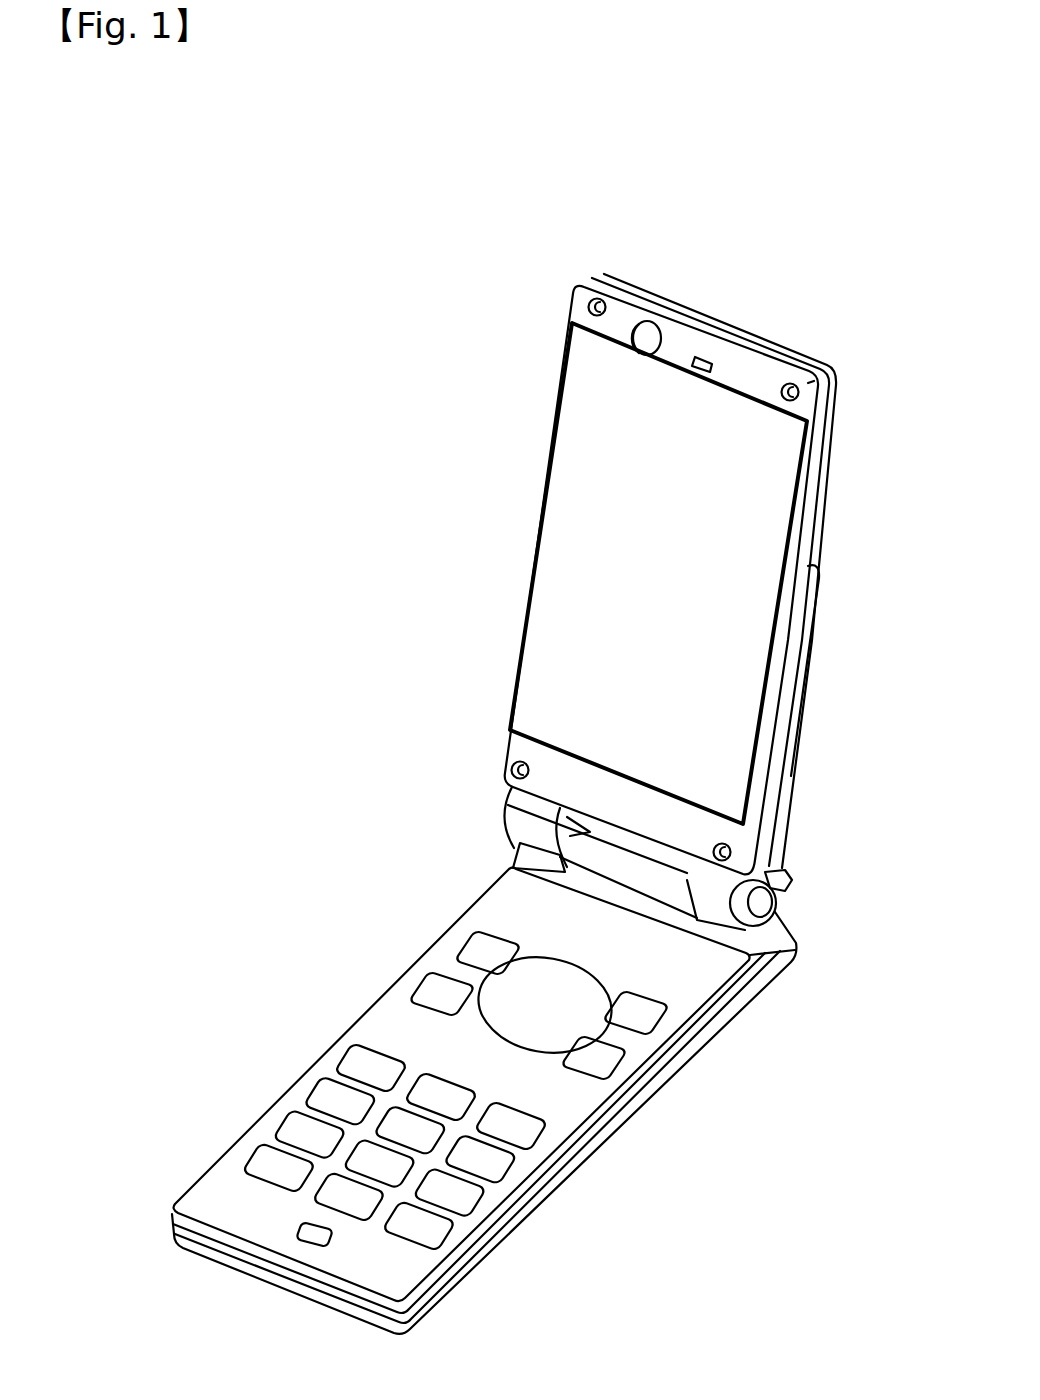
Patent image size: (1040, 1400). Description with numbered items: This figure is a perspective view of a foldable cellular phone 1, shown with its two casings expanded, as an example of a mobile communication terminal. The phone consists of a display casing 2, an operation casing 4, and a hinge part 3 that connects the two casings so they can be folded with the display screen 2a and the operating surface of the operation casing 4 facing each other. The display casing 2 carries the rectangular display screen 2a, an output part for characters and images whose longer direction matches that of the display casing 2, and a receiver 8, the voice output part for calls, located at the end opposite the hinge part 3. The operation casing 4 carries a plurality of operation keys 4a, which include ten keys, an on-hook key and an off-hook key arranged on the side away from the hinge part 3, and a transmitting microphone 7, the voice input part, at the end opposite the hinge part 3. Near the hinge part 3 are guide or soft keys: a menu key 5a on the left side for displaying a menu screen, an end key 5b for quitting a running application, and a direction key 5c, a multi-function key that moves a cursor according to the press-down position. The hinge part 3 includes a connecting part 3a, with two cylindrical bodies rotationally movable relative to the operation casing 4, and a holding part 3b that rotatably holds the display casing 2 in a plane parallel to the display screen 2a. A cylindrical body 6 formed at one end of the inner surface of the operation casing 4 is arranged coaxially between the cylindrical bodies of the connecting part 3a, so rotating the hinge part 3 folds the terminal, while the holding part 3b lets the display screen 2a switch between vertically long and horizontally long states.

The cellular phone 1 is at (330, 600).
The display casing 2 is at (807, 346).
The display screen 2a is at (700, 457).
The hinge part 3 is at (815, 703).
The connecting part 3a is at (795, 887).
The holding part 3b is at (812, 633).
The operation casing 4 is at (590, 1183).
The operation keys 4a is at (560, 1117).
The menu key 5a is at (507, 930).
The end key 5b is at (663, 1000).
The direction key 5c is at (440, 972).
The cylindrical body 6 is at (508, 800).
The transmitting microphone 7 is at (306, 1240).
The receiver 8 is at (703, 350).